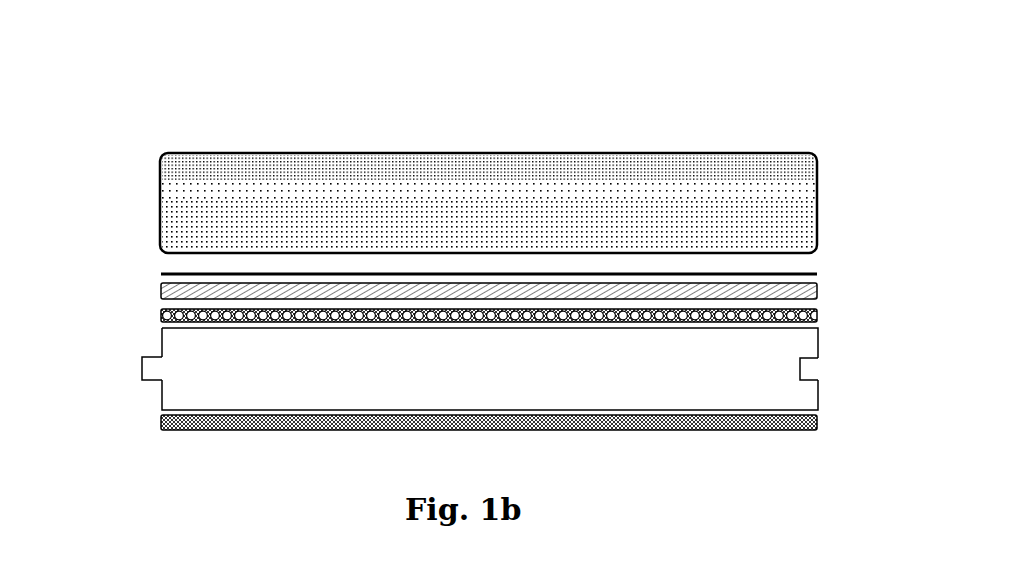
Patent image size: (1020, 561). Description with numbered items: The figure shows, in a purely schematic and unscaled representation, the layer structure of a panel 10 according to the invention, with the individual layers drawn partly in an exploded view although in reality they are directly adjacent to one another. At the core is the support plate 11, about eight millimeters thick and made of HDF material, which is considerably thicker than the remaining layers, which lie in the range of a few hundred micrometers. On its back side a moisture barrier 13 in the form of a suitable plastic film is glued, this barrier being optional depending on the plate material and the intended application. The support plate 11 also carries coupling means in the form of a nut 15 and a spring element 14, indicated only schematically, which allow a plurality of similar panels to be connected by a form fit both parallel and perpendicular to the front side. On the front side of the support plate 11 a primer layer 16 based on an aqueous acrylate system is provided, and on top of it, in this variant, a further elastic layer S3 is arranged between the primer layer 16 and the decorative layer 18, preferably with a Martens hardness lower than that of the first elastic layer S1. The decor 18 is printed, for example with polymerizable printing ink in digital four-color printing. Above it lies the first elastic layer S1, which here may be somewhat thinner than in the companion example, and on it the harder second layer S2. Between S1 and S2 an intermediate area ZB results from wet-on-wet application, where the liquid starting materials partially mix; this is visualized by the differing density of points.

The panel 10 is at (470, 244).
The first elastic layer S1 is at (484, 191).
The second layer S2 is at (800, 163).
The intermediate area ZB is at (800, 190).
The decorative layer 18 is at (163, 274).
The further elastic layer S3 is at (815, 292).
The primer layer 16 is at (818, 316).
The support plate 11 is at (233, 363).
The spring element 14 is at (145, 377).
The nut element 15 is at (812, 362).
The moisture barrier 13 is at (818, 425).